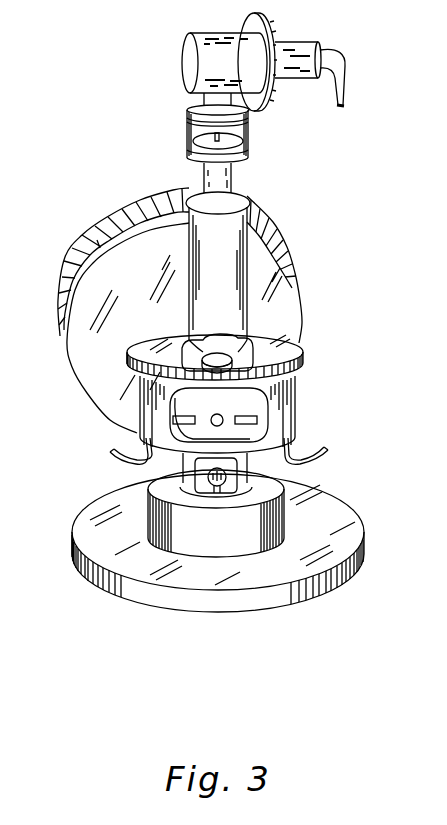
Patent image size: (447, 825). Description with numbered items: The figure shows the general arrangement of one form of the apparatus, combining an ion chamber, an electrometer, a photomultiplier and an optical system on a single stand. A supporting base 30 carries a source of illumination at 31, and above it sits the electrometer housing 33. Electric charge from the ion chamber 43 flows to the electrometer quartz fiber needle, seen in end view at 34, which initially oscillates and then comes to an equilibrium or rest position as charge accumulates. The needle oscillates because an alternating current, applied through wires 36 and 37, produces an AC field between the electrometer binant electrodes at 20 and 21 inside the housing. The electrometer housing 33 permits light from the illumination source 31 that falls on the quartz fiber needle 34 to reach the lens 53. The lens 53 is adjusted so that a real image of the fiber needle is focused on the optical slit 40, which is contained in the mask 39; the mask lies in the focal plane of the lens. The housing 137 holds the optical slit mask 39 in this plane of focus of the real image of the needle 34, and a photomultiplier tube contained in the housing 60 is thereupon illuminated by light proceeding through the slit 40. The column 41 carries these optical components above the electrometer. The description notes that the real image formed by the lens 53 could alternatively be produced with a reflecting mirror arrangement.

The housing 60 is at (190, 55).
The housing 137 is at (171, 112).
The mask 39 is at (212, 141).
The optical slit 40 is at (190, 149).
The ion chamber 43 is at (88, 235).
The column 41 is at (248, 262).
The lens 53 is at (223, 357).
The electrometer housing 33 is at (206, 394).
The binant electrode 21 is at (170, 397).
The quartz fiber needle 34 is at (220, 418).
The binant electrode 20 is at (250, 419).
The wire 37 is at (113, 465).
The wire 36 is at (302, 458).
The source of illumination 31 is at (165, 475).
The supporting base 30 is at (137, 597).